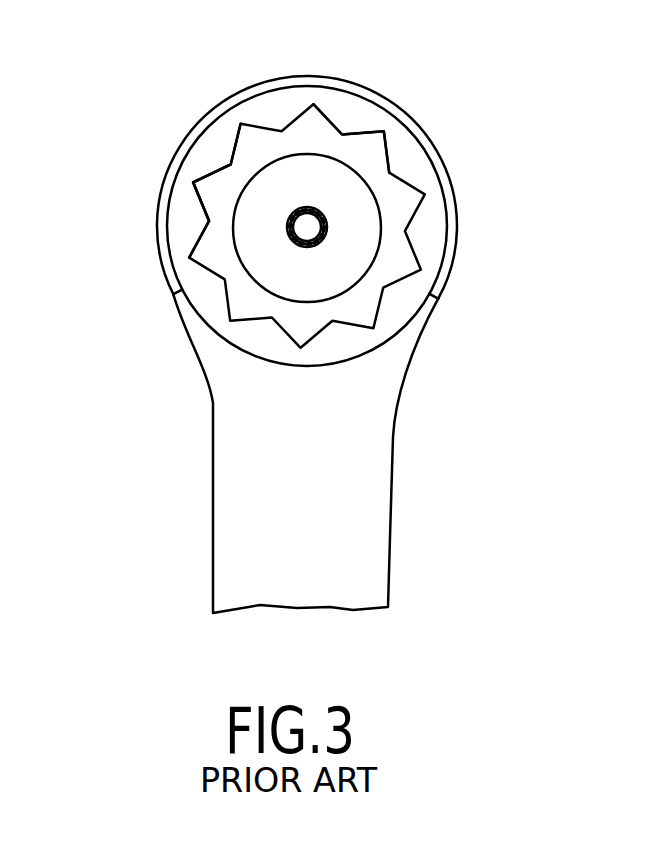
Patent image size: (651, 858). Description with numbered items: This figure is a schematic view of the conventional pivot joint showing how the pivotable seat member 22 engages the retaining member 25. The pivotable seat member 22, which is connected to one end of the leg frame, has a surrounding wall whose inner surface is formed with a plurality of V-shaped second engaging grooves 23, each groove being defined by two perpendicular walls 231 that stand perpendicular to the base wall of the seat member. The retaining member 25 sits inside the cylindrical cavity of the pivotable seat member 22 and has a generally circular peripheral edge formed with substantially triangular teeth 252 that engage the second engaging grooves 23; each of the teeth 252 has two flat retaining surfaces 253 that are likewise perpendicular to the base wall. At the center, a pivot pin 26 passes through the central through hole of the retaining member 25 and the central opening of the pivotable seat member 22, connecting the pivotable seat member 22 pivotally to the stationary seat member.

The pivotable seat member 22 is at (448, 268).
The second engaging grooves 23 is at (384, 131).
The perpendicular walls 231 is at (362, 133).
The retaining member 25 is at (387, 278).
The triangular teeth 252 is at (208, 185).
The flat retaining surfaces 253 is at (215, 170).
The pivot pin 26 is at (327, 227).